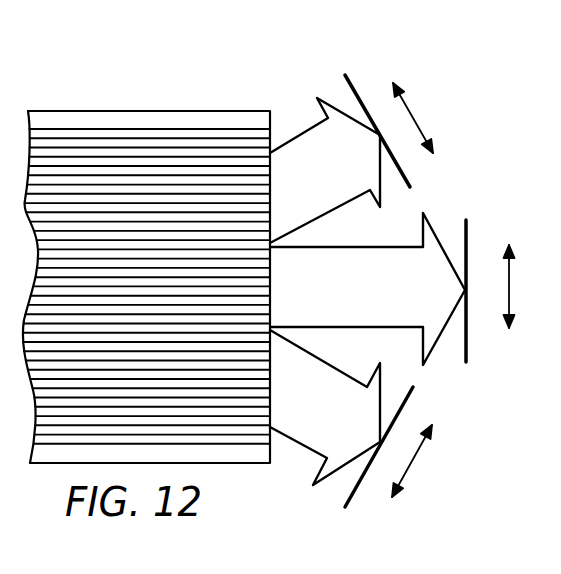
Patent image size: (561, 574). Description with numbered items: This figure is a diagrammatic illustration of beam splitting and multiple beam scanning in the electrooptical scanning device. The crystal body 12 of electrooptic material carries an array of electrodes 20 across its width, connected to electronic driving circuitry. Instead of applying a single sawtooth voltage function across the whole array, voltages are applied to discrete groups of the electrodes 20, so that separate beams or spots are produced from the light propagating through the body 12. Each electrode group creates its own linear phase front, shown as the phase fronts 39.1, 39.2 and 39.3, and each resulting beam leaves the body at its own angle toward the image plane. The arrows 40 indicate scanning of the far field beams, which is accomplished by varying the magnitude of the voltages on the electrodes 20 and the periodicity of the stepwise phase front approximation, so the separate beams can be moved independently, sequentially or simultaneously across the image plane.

The crystal body 12 is at (104, 110).
The array of electrodes 20 is at (188, 147).
The phase front 39.1 is at (349, 74).
The phase front 39.2 is at (468, 244).
The phase front 39.3 is at (352, 492).
The scanning direction arrow 40 is at (413, 114).